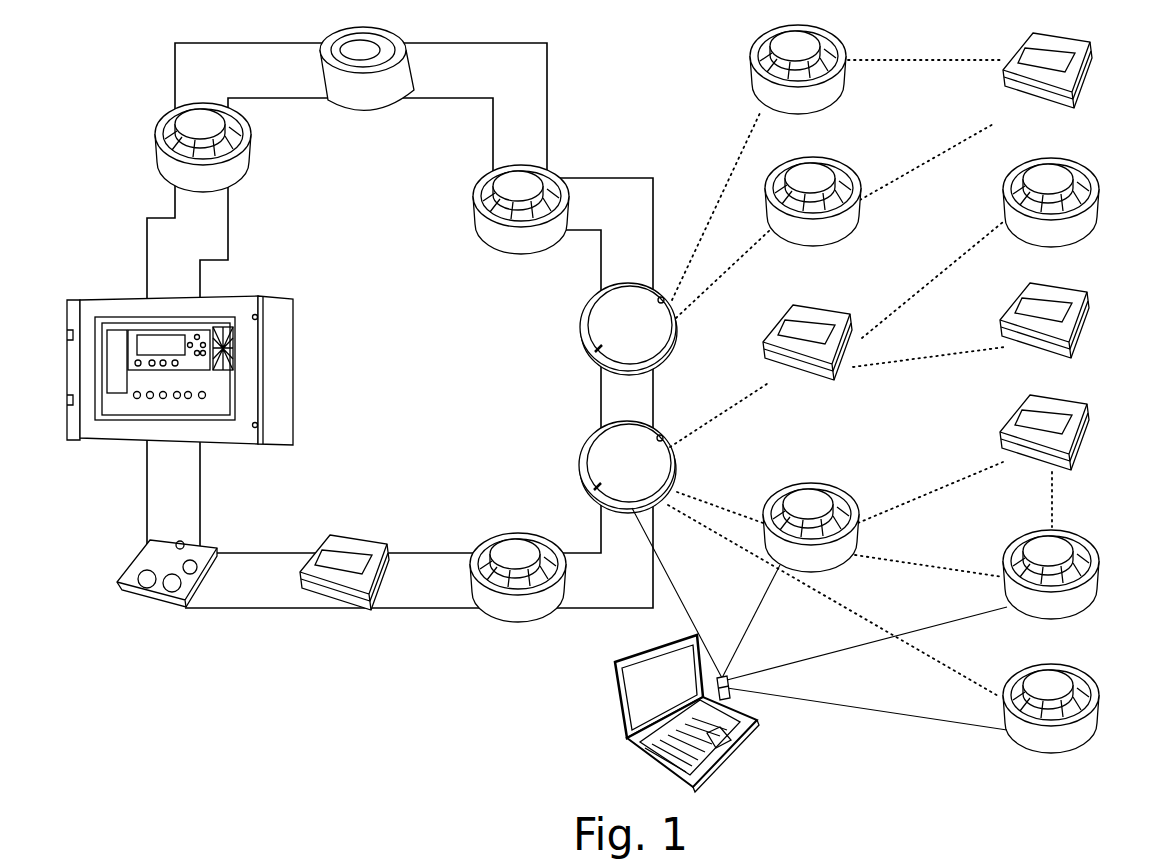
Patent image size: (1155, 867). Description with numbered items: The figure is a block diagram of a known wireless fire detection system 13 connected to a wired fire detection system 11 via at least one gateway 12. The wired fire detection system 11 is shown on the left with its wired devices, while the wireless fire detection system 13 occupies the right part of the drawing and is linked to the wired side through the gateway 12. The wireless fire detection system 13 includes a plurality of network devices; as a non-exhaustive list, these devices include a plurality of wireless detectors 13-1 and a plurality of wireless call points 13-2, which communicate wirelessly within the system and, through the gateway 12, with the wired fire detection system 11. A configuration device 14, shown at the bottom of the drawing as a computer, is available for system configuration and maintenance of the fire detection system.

The wired fire detection system 11 is at (384, 368).
The gateway 12 is at (585, 293).
The wireless fire detection system 13 is at (871, 392).
The wireless detectors 13-1 is at (643, 100).
The wireless call points 13-2 is at (940, 95).
The configuration device 14 is at (732, 760).